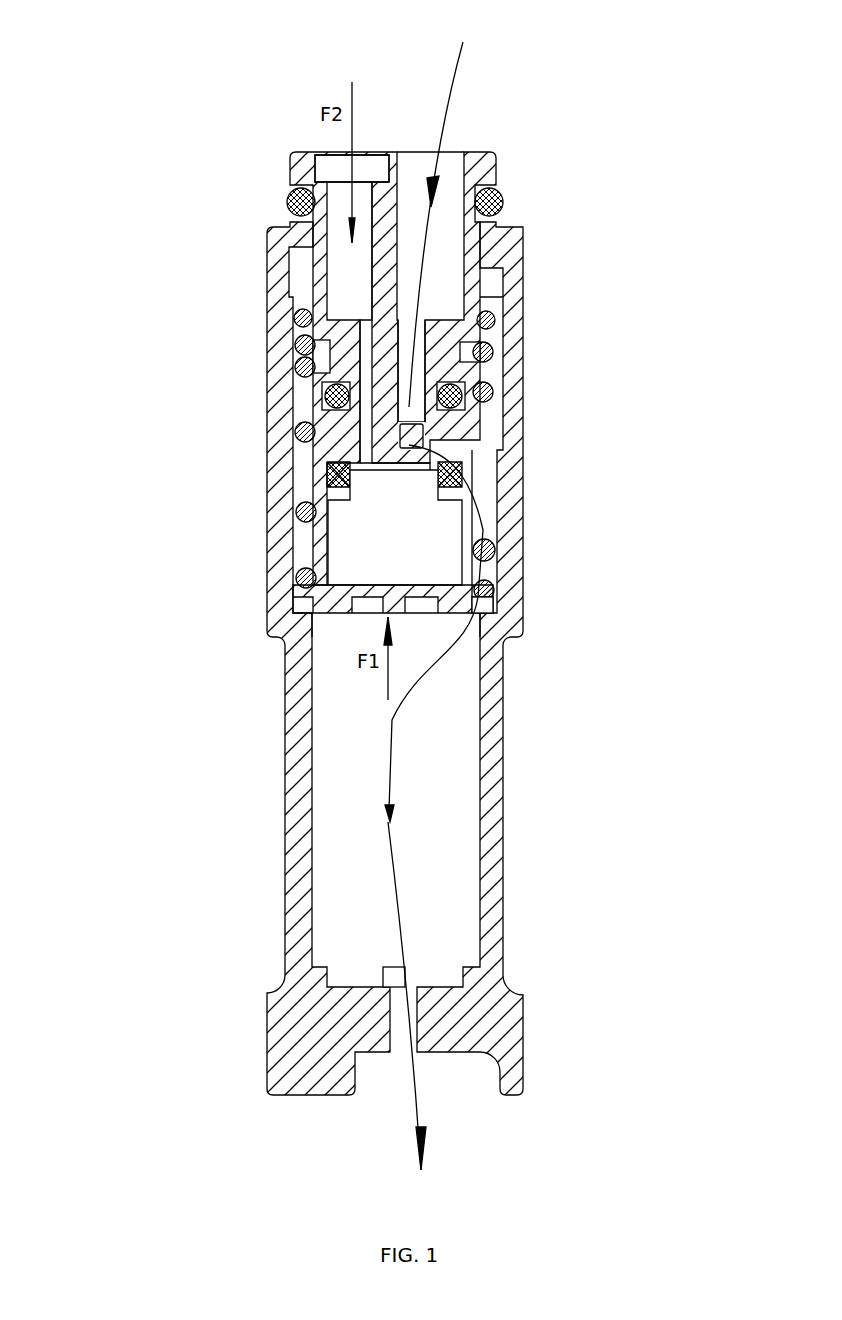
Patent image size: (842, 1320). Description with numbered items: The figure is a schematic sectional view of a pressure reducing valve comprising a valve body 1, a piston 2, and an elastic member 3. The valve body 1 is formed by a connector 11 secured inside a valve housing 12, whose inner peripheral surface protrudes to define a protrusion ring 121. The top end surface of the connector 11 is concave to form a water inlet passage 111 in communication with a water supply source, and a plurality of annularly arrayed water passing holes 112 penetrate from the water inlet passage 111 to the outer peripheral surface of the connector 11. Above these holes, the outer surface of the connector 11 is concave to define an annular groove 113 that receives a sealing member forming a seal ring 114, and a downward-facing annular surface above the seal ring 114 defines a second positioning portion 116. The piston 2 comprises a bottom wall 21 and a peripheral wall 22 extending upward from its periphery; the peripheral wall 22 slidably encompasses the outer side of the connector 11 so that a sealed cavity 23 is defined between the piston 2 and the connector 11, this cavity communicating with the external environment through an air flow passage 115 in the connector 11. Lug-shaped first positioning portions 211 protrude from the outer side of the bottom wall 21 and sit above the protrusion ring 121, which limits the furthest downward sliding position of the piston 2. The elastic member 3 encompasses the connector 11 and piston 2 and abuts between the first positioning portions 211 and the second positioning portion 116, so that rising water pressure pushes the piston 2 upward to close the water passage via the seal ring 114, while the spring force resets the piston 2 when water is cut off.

The valve body 1 is at (351, 658).
The piston 2 is at (463, 545).
The elastic member 3 is at (440, 401).
The connector 11 is at (483, 310).
The valve housing 12 is at (262, 318).
The bottom wall 21 is at (358, 596).
The peripheral wall 22 is at (318, 537).
The sealed cavity 23 is at (375, 543).
The water inlet passage 111 is at (425, 405).
The water passing holes 112 is at (450, 438).
The annular groove 113 is at (322, 372).
The seal ring 114 is at (330, 400).
The air flow passage 115 is at (345, 268).
The second positioning portion 116 is at (478, 350).
The protrusion ring 121 is at (492, 622).
The first positioning portions 211 is at (470, 603).